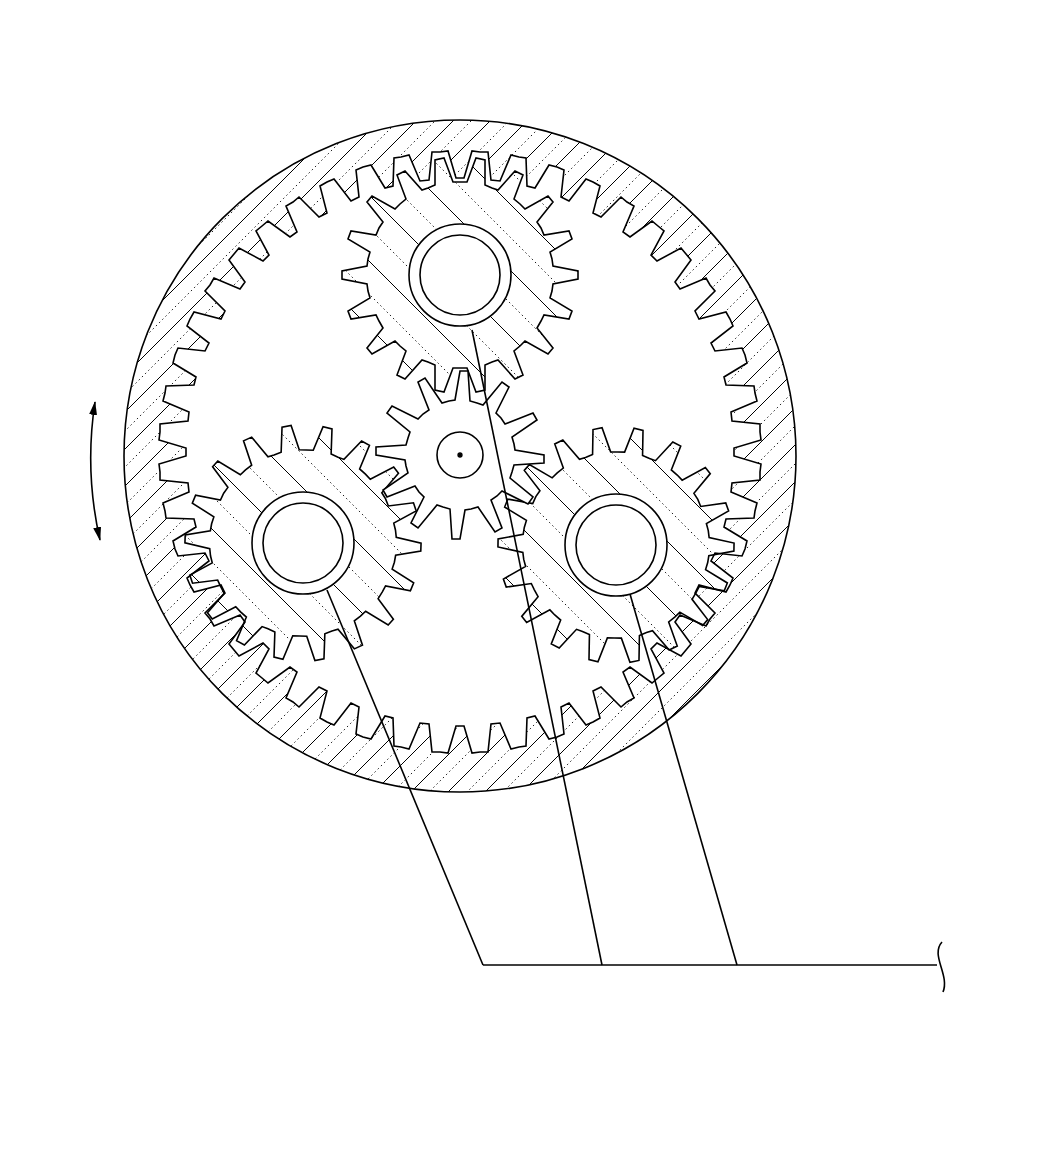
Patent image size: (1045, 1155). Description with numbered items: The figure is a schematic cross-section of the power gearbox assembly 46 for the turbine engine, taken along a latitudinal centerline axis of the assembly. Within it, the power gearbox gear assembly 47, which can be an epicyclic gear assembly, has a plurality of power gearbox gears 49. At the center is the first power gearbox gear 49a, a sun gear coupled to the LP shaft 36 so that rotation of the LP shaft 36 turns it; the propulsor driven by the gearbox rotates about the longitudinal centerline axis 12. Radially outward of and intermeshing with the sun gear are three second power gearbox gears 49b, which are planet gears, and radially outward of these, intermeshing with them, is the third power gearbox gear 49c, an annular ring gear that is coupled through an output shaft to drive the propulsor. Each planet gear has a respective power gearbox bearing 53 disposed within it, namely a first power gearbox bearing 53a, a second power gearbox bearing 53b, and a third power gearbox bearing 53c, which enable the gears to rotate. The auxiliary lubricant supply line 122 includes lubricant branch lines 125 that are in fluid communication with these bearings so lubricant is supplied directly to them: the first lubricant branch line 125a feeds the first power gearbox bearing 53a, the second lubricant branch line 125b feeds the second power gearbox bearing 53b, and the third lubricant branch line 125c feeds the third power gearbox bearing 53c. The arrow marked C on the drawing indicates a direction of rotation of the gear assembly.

The power gearbox assembly 46 is at (228, 42).
The power gearbox gear assembly 47 is at (208, 165).
The plurality of power gearbox gears 49 is at (730, 230).
The first power gearbox gear 49a is at (528, 412).
The second power gearbox gears 49b is at (488, 172).
The third power gearbox gear 49c is at (322, 163).
The longitudinal centerline axis 12 is at (460, 455).
The LP shaft 36 is at (463, 490).
The power gearbox bearings 53 is at (492, 223).
The first power gearbox bearing 53a is at (250, 543).
The second power gearbox bearing 53b is at (507, 238).
The third power gearbox bearing 53c is at (668, 520).
The lubricant branch lines 125 is at (452, 910).
The first lubricant branch line 125a is at (432, 844).
The second lubricant branch line 125b is at (579, 857).
The third lubricant branch line 125c is at (692, 824).
The auxiliary lubricant supply line 122 is at (858, 967).
The direction of rotation C is at (92, 462).